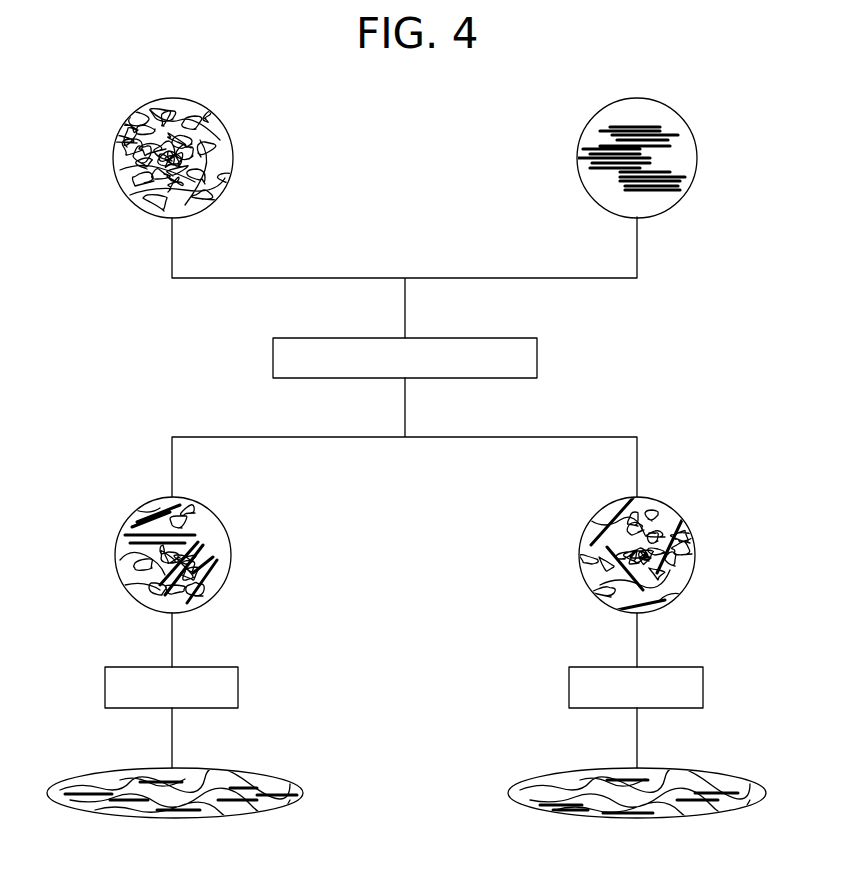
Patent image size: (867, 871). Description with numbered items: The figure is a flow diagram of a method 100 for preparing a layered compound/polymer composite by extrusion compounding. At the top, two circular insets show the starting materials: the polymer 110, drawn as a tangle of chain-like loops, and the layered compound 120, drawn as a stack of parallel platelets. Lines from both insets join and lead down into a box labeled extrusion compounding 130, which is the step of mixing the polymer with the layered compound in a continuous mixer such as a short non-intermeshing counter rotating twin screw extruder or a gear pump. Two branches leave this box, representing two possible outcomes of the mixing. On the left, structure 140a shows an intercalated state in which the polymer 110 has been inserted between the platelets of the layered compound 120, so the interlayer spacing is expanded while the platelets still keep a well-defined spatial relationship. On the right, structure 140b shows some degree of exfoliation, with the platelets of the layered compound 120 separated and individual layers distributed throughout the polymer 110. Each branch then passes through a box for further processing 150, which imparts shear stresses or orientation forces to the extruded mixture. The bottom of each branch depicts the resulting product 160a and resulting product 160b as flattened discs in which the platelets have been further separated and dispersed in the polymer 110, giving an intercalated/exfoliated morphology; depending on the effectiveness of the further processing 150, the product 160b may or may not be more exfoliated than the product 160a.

The method 100 is at (93, 104).
The polymer 110 is at (187, 112).
The layered compound 120 is at (660, 125).
The extrusion compounding 130 is at (537, 354).
The structure 140a is at (197, 498).
The structure 140b is at (663, 498).
The further processing 150 is at (223, 667).
The resulting product 160a is at (212, 767).
The resulting product 160b is at (670, 767).